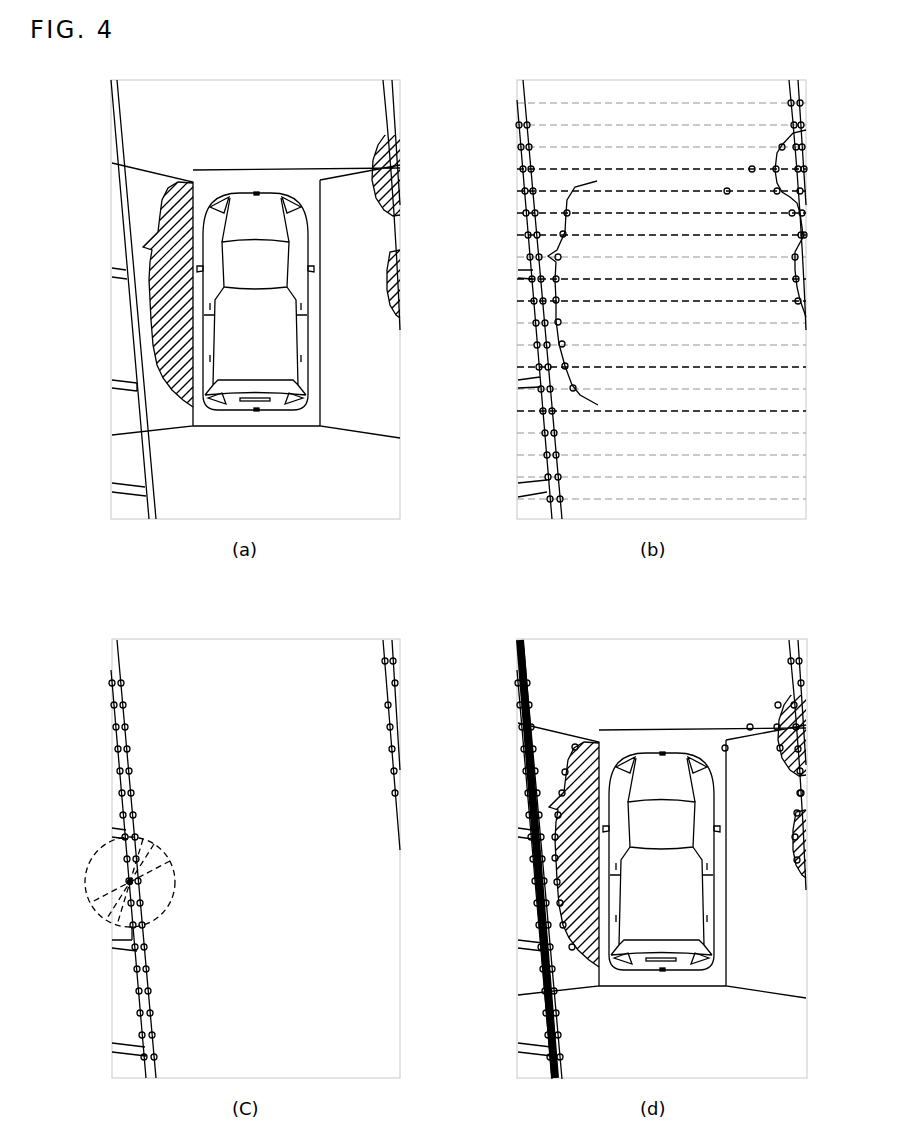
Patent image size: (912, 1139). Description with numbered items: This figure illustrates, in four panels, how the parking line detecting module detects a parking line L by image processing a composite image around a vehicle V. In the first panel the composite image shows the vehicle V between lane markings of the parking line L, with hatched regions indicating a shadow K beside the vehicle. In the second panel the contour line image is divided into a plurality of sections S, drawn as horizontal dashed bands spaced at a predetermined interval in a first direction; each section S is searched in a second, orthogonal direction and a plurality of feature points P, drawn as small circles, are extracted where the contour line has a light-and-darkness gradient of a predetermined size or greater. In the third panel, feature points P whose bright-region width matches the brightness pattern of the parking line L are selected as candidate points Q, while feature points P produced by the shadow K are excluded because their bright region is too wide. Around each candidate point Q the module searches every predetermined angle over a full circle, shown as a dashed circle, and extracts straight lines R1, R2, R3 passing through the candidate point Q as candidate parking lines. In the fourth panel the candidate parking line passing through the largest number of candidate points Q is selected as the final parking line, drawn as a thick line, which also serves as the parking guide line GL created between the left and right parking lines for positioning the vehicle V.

The shadow K is at (183, 188).
The vehicle V is at (270, 212).
The parking line L is at (116, 376).
The feature point P is at (522, 148).
The section S is at (791, 511).
The candidate point Q is at (126, 882).
The straight line R1 is at (93, 902).
The straight line R2 is at (107, 917).
The straight line R3 is at (118, 922).
The parking guide line GL is at (520, 748).